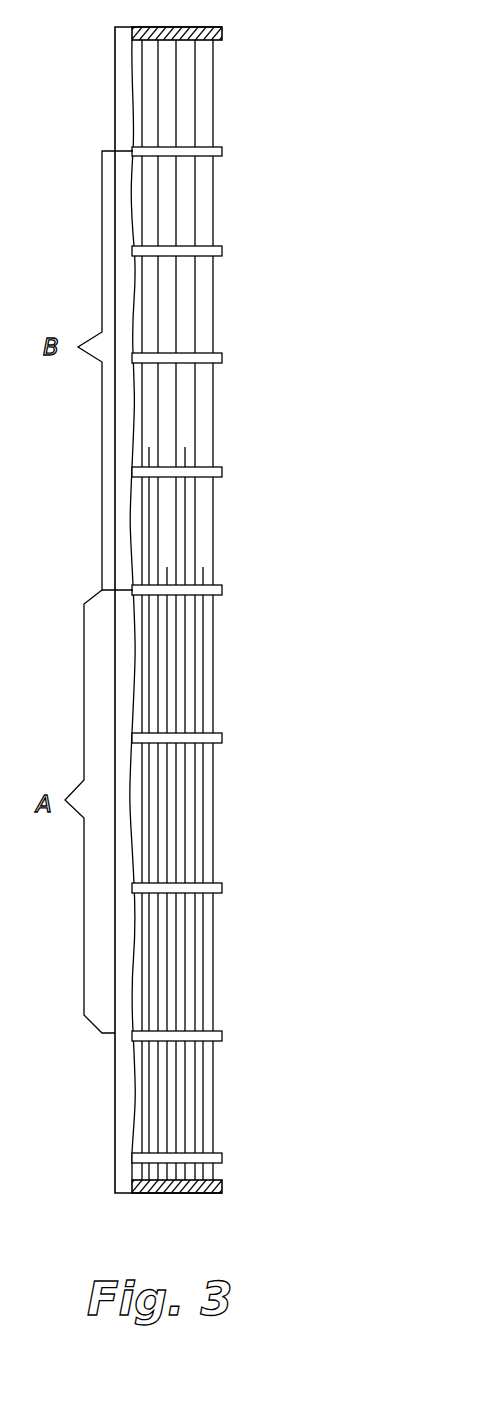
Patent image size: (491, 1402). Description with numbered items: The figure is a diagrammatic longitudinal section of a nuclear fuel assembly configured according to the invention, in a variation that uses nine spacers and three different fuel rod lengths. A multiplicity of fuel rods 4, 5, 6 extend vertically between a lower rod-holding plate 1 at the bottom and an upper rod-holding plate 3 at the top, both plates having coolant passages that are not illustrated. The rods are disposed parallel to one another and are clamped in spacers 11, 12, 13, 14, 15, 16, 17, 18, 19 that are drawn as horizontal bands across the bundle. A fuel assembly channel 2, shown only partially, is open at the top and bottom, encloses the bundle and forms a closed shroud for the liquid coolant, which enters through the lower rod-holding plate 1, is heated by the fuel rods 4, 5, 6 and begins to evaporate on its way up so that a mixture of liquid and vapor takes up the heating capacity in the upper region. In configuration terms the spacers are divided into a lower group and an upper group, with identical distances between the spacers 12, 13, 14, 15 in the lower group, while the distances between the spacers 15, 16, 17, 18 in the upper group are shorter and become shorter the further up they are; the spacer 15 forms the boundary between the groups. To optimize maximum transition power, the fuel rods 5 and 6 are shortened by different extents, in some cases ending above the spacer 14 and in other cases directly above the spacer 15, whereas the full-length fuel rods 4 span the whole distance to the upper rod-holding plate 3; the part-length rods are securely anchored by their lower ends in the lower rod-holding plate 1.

The lower rod-holding plate 1 is at (217, 1190).
The fuel assembly channel 2 is at (121, 1098).
The upper rod-holding plate 3 is at (217, 35).
The fuel rod 4 is at (142, 116).
The fuel rod 5 is at (149, 523).
The fuel rod 6 is at (133, 680).
The spacer 11 is at (222, 1158).
The spacer 12 is at (222, 1035).
The spacer 13 is at (222, 884).
The spacer 14 is at (222, 738).
The spacer 15 is at (222, 588).
The spacer 16 is at (222, 472).
The spacer 17 is at (222, 358).
The spacer 18 is at (222, 252).
The spacer 19 is at (222, 152).